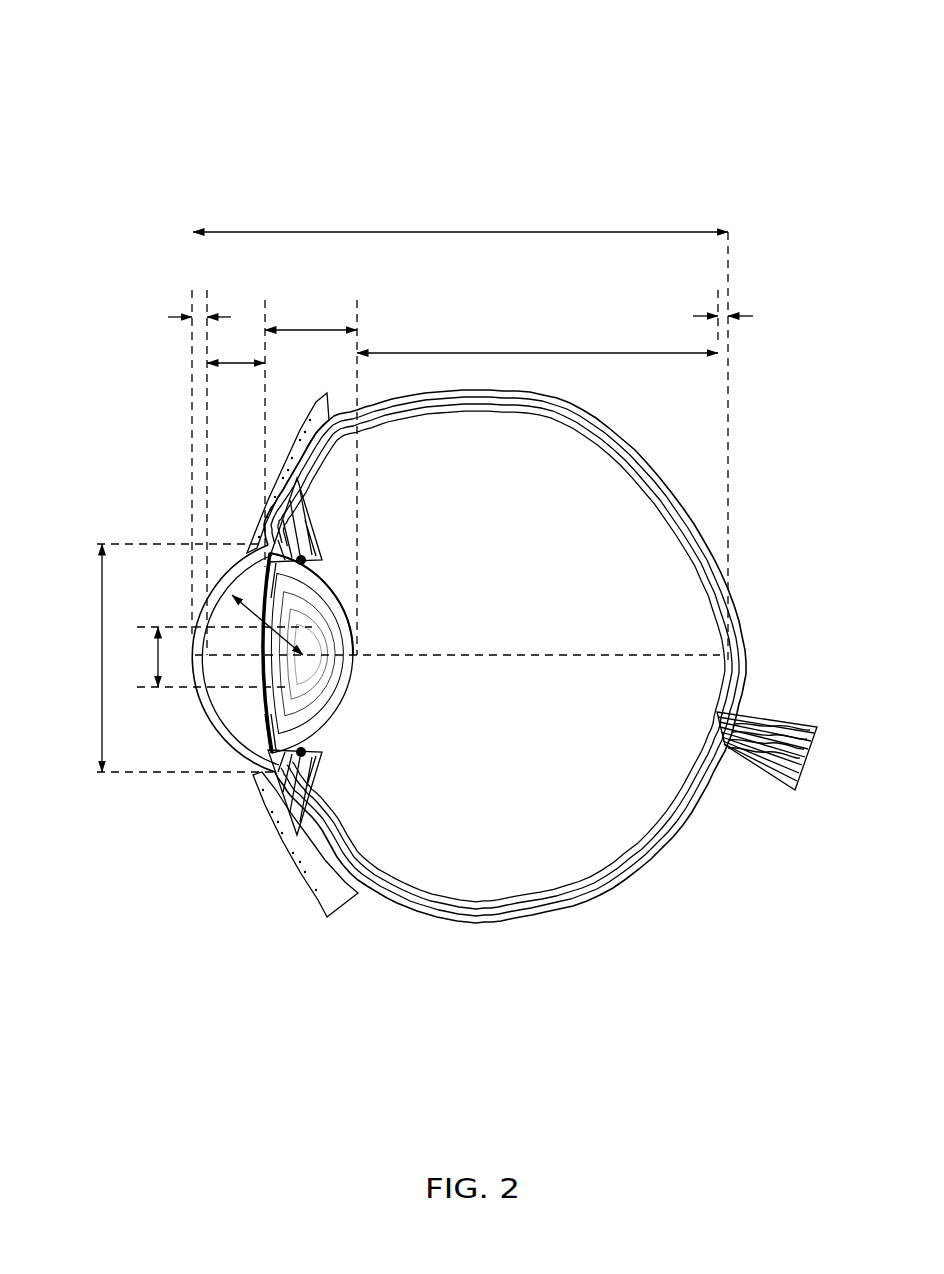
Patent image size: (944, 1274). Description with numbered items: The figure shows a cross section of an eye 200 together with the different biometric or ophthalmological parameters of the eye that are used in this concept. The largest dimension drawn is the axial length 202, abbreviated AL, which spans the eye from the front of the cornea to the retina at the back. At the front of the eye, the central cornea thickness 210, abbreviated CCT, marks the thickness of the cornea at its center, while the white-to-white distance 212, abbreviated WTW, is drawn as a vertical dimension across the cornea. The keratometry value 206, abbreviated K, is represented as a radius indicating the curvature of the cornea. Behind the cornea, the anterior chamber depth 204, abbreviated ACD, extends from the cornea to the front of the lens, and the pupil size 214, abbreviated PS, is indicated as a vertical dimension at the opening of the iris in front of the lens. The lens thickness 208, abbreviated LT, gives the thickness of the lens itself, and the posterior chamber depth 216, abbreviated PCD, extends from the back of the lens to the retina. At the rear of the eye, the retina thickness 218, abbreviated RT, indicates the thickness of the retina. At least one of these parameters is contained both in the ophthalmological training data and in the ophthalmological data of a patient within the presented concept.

The eye 200 is at (183, 107).
The axial length 202 is at (460, 425).
The anterior chamber depth 204 is at (236, 396).
The keratometry value 206 is at (252, 605).
The lens thickness 208 is at (311, 472).
The central cornea thickness 210 is at (199, 458).
The white-to-white distance 212 is at (172, 658).
The pupil size 214 is at (214, 657).
The posterior chamber depth 216 is at (537, 321).
The retina thickness 218 is at (751, 292).